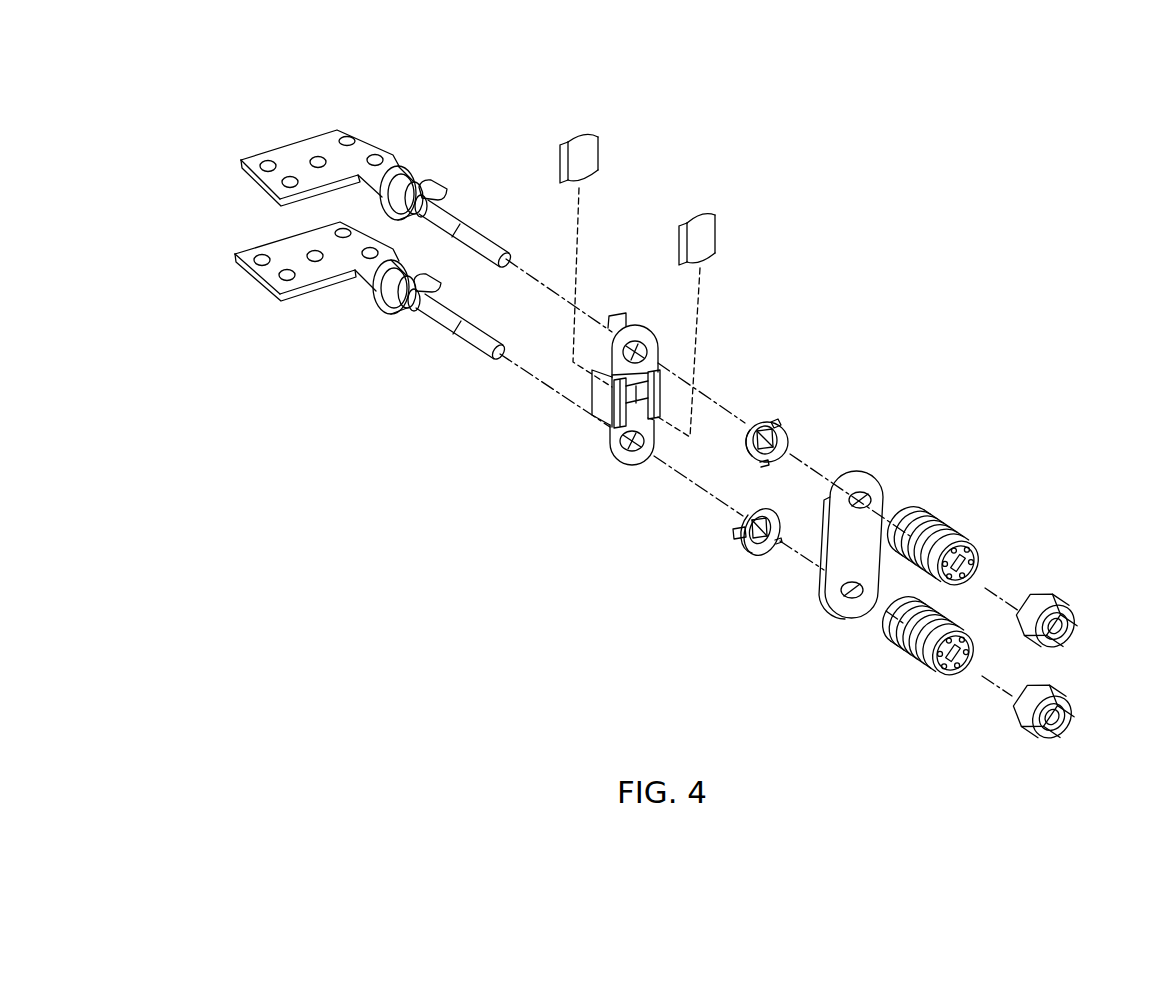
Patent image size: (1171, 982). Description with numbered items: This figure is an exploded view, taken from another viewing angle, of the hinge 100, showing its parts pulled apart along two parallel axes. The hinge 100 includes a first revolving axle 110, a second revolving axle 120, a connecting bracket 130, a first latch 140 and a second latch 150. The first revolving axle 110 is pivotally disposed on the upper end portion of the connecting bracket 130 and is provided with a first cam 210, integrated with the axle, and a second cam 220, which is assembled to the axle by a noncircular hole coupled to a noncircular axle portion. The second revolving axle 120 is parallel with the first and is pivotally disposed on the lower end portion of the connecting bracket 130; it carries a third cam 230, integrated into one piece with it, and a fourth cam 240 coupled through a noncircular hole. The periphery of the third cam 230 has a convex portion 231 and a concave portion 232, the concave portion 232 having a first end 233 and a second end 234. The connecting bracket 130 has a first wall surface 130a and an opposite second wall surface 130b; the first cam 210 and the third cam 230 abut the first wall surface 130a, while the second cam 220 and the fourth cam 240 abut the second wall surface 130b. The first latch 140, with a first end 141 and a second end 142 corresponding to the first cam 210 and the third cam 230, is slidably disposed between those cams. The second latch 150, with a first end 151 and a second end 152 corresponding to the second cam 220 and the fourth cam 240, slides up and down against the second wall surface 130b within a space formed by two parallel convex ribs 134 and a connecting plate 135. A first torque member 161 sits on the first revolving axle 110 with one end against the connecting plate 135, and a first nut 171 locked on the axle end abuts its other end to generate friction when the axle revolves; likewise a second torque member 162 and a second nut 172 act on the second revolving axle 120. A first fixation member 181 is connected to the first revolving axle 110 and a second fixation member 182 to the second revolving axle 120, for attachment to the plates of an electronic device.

The hinge 100 is at (355, 612).
The first revolving axle 110 is at (462, 237).
The second revolving axle 120 is at (478, 347).
The connecting bracket 130 is at (595, 453).
The first wall surface 130a is at (598, 432).
The second wall surface 130b is at (618, 462).
The convex ribs 134 is at (660, 407).
The connecting plate 135 is at (852, 467).
The first latch 140 is at (588, 152).
The first end 141 is at (580, 132).
The second end 142 is at (588, 182).
The second latch 150 is at (707, 233).
The first end 151 is at (700, 210).
The second end 152 is at (708, 262).
The first torque member 161 is at (952, 522).
The second torque member 162 is at (918, 657).
The first nut 171 is at (1057, 592).
The second nut 172 is at (1058, 710).
The first fixation member 181 is at (283, 153).
The second fixation member 182 is at (285, 245).
The first cam 210 is at (433, 190).
The second cam 220 is at (782, 427).
The third cam 230 is at (380, 428).
The convex portion 231 is at (372, 292).
The concave portion 232 is at (412, 312).
The first end 233 is at (403, 288).
The second end 234 is at (404, 316).
The fourth cam 240 is at (753, 545).